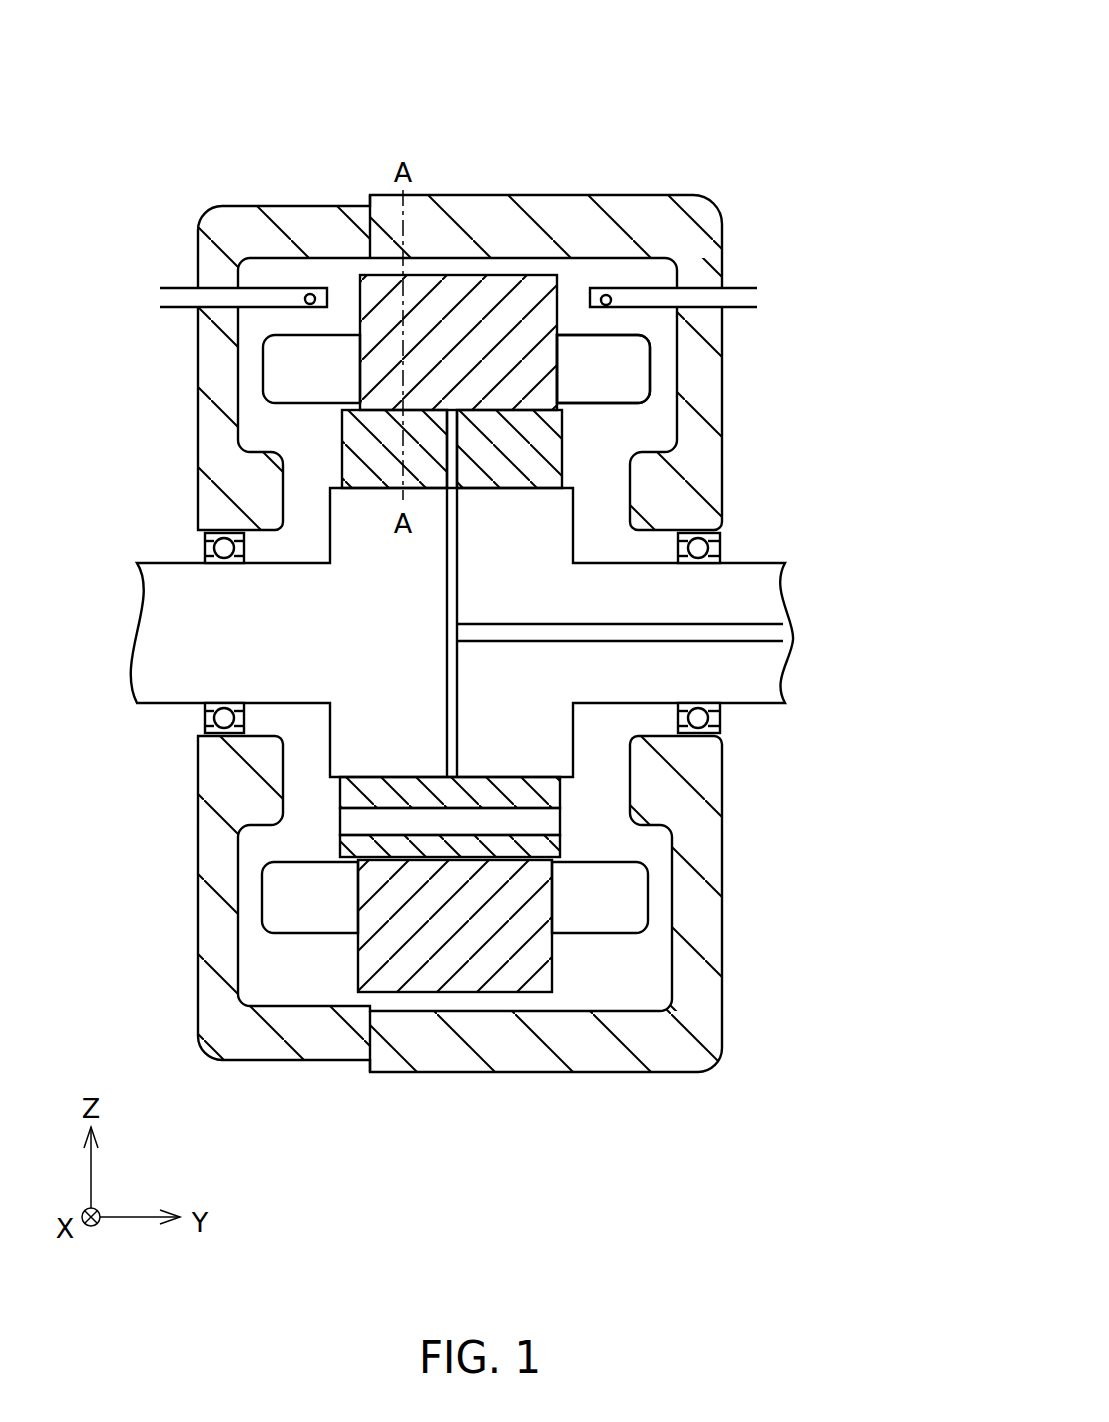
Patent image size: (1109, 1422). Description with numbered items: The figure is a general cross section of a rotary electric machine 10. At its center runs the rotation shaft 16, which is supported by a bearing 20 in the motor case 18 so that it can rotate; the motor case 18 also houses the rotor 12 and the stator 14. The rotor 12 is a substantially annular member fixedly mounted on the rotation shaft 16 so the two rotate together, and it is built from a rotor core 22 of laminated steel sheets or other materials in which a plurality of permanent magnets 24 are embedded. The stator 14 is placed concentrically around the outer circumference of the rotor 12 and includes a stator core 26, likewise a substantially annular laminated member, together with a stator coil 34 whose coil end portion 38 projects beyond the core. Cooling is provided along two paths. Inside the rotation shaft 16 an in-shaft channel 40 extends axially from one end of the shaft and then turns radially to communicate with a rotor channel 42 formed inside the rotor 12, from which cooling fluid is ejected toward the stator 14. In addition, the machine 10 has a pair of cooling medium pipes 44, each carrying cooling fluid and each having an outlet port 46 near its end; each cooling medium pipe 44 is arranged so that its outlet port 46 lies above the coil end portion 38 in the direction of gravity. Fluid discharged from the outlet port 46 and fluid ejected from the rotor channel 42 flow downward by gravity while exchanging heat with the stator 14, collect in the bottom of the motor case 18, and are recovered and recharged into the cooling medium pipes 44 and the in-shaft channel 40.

The rotary electric machine 10 is at (685, 133).
The rotor 12 is at (468, 299).
The stator 14 is at (341, 955).
The rotation shaft 16 is at (773, 603).
The motor case 18 is at (537, 1045).
The bearing 20 is at (202, 718).
The rotor core 22 is at (543, 455).
The permanent magnets 24 is at (353, 823).
The stator core 26 is at (447, 273).
The stator coil 34 is at (640, 375).
The coil end portion 38 is at (603, 369).
The in-shaft channel 40 is at (740, 643).
The rotor channel 42 is at (462, 442).
The cooling medium pipe 44 is at (183, 288).
The outlet port 46 is at (310, 294).